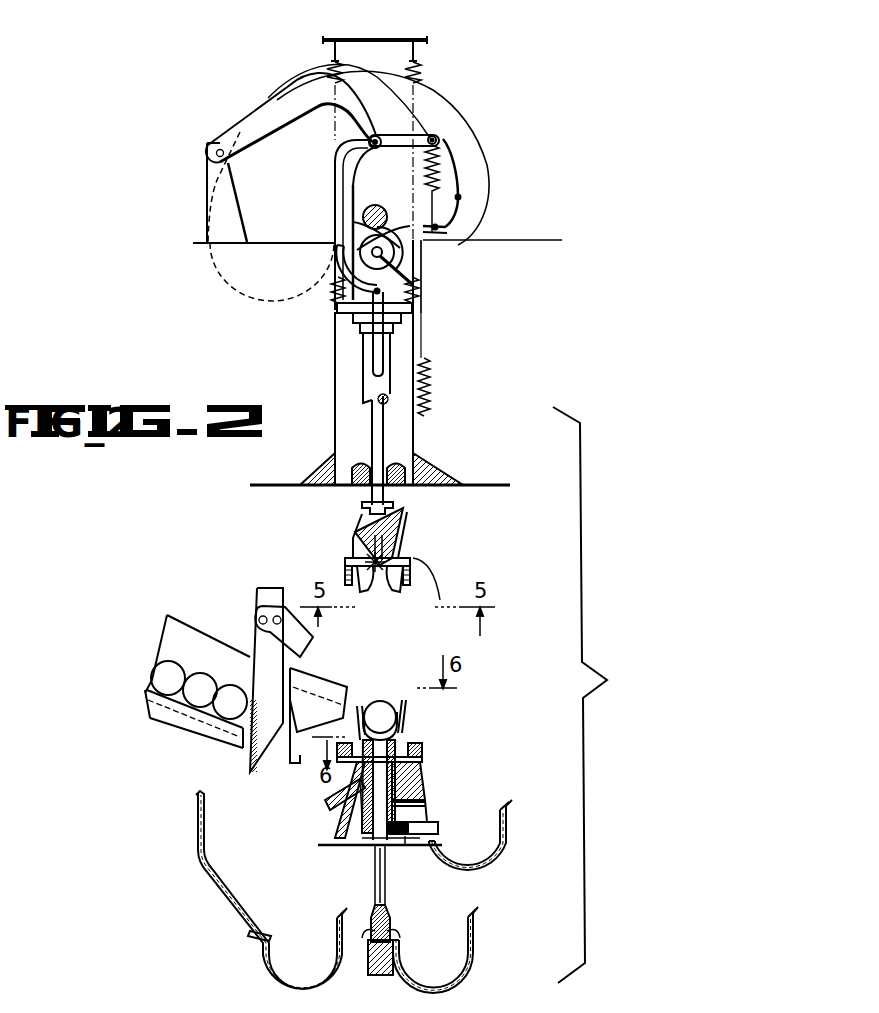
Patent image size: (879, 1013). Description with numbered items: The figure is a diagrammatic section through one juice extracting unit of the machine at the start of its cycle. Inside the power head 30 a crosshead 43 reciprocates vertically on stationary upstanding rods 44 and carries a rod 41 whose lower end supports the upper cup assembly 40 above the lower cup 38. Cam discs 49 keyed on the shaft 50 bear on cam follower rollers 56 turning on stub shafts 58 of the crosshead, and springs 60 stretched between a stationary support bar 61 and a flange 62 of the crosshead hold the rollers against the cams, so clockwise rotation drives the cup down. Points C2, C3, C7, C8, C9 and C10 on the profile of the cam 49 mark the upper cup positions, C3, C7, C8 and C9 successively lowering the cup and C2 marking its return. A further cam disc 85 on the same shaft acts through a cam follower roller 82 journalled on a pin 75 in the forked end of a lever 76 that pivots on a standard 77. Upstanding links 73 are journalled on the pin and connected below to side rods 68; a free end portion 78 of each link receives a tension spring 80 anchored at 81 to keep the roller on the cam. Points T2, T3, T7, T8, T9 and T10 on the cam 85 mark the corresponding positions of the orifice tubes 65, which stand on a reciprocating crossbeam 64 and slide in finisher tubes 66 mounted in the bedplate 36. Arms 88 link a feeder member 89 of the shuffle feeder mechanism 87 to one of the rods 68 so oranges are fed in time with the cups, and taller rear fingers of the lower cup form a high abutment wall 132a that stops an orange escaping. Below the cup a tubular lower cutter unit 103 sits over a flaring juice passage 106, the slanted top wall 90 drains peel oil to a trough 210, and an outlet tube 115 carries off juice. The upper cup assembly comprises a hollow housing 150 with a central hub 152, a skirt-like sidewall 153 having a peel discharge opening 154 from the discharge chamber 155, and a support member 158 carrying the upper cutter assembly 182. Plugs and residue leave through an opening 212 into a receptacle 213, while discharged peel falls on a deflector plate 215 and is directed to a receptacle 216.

The stationary support bar 61 is at (387, 40).
The springs 60 is at (337, 65).
The lever 76 is at (297, 110).
The cam profile point C3 is at (418, 99).
The cam discs 49 is at (450, 122).
The pin 75 is at (376, 136).
The free end portion 78 is at (445, 138).
The cam profile point T2 is at (378, 148).
The cam follower roller 82 is at (342, 178).
The tension spring 80 is at (437, 177).
The shaft 50 is at (397, 190).
The cam profile point T9 is at (460, 197).
The upstanding links 73 is at (351, 207).
The cam disc 85 is at (448, 207).
The cam profile point T10 is at (453, 150).
The cam profile point T7 is at (437, 227).
The cam profile point T3 is at (383, 238).
The cam profile point T8 is at (423, 238).
The cam profile point C7 is at (214, 180).
The cam profile point C8 is at (212, 202).
The standard 77 is at (226, 218).
The cam profile point C9 is at (207, 243).
The cam profile point C2 is at (357, 249).
The cam follower rollers 56 is at (386, 257).
The stub shafts 58 is at (414, 285).
The crosshead 43 is at (408, 312).
The flange 62 is at (412, 314).
The cam profile point C10 is at (295, 299).
The rods 68 is at (376, 360).
The stationary upstanding rods 44 is at (372, 386).
The spring anchor 81 is at (424, 417).
The rod 41 is at (377, 437).
The power head 30 is at (320, 486).
The central hub 152 is at (378, 512).
The hollow housing 150 is at (417, 500).
The opening 154 is at (405, 518).
The discharge chamber 155 is at (408, 530).
The support member 158 is at (390, 547).
The upper cutter assembly 182 is at (388, 555).
The upper cup assembly 40 is at (341, 540).
The skirt-like sidewall 153 is at (346, 551).
The deflector plate 215 is at (438, 580).
The shuffle feeder mechanism 87 is at (208, 725).
The feeder member 89 is at (268, 598).
The arms 88 is at (309, 640).
The high abutment wall 132a is at (408, 705).
The lower cup 38 is at (413, 731).
The lower cutter unit 103 is at (397, 737).
The juice passage 106 is at (395, 778).
The bedplate 36 is at (426, 782).
The finisher tube 66 is at (390, 805).
The top wall 90 is at (326, 801).
The outlet tube 115 is at (438, 828).
The orifice tubes 65 is at (377, 896).
The opening 212 is at (389, 897).
The crossbeam 64 is at (372, 949).
The receptacle 216 is at (507, 857).
The receptacle 213 is at (479, 953).
The trough 210 is at (285, 984).